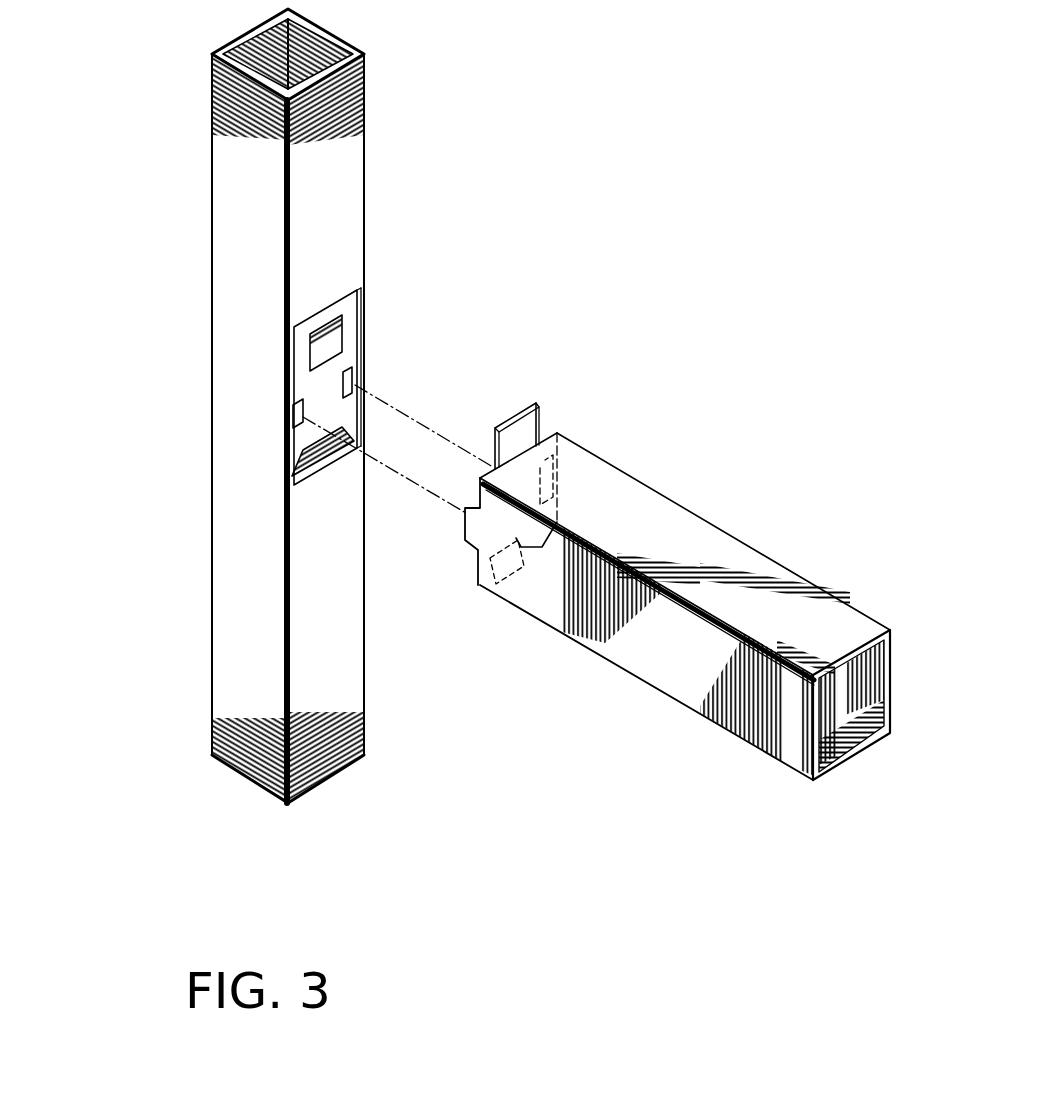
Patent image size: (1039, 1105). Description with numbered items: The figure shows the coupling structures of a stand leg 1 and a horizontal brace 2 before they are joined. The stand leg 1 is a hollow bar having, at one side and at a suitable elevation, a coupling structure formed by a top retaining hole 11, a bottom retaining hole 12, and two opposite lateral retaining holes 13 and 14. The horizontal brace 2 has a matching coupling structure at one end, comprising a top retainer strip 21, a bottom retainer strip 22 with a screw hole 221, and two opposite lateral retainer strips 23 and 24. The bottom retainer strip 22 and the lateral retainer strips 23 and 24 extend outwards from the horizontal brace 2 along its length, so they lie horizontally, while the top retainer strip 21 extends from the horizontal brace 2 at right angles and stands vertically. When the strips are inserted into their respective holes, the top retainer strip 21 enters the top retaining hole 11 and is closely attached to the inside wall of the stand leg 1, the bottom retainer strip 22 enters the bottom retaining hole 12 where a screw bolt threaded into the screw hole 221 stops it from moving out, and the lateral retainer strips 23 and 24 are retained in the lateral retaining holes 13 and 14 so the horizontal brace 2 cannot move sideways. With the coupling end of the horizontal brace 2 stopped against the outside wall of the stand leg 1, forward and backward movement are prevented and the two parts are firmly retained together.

The stand leg 1 is at (347, 245).
The top retaining hole 11 is at (353, 320).
The bottom retaining hole 12 is at (294, 476).
The lateral retaining hole 13 is at (290, 414).
The lateral retaining hole 14 is at (352, 378).
The horizontal brace 2 is at (690, 708).
The top retainer strip 21 is at (533, 430).
The bottom retainer strip 22 is at (500, 562).
The screw hole 221 is at (520, 556).
The lateral retainer strip 23 is at (465, 527).
The lateral retainer strip 24 is at (560, 483).